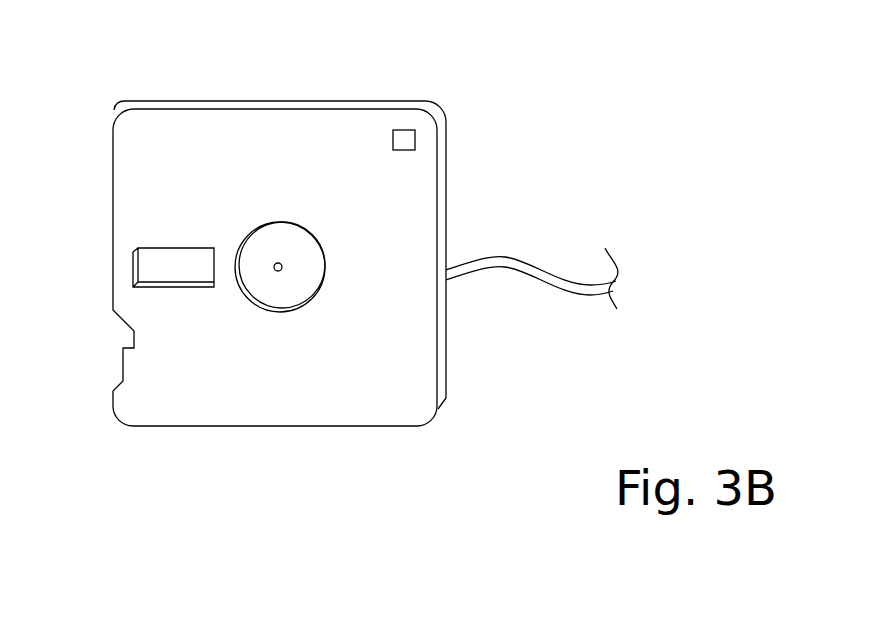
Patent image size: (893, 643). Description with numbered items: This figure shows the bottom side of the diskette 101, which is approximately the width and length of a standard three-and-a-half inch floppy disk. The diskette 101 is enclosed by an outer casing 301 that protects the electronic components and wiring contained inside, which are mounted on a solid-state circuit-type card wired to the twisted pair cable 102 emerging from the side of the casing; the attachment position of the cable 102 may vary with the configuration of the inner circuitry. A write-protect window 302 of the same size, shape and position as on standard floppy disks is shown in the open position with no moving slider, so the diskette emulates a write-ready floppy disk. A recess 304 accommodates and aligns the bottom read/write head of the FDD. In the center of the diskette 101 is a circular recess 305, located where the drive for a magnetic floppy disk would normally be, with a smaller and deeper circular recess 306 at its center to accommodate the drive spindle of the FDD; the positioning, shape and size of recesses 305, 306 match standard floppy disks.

The diskette 101 is at (268, 497).
The twisted pair cable 102 is at (516, 247).
The outer casing 301 is at (250, 92).
The write-protect window 302 is at (430, 126).
The recess 304 is at (128, 248).
The circular recess 305 is at (250, 316).
The smaller circular recess 306 is at (282, 250).